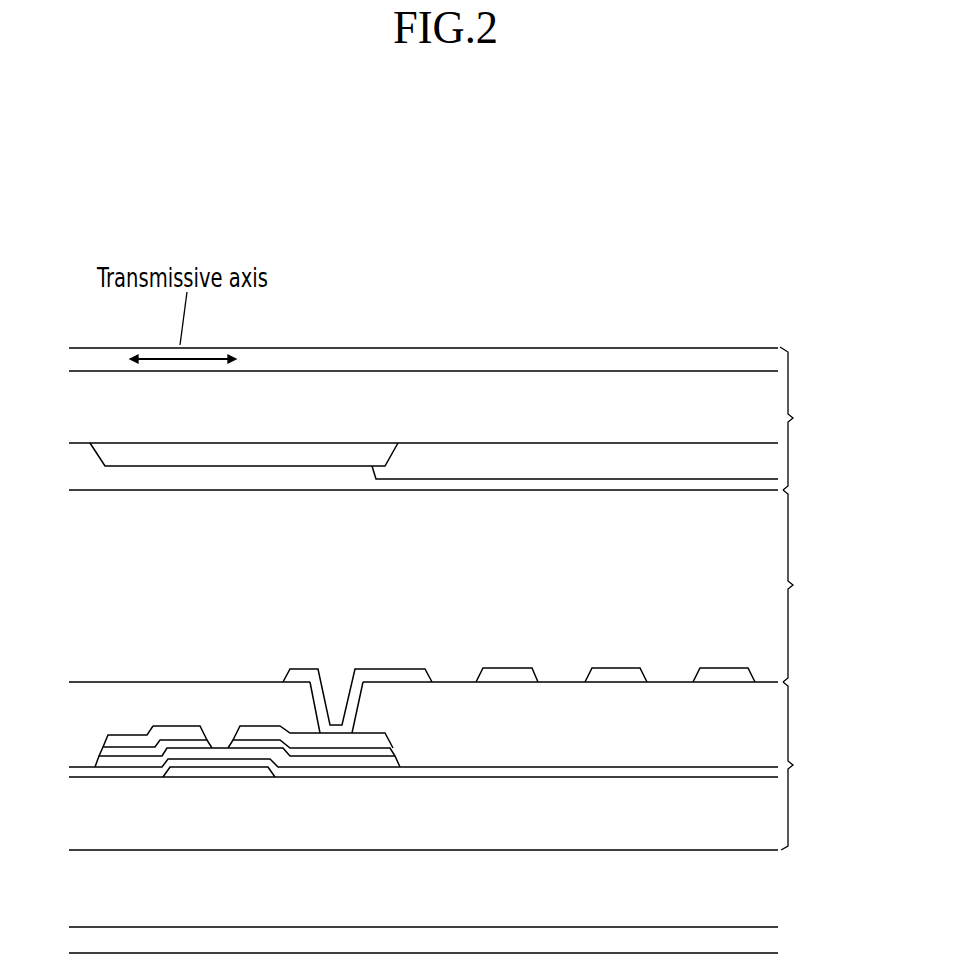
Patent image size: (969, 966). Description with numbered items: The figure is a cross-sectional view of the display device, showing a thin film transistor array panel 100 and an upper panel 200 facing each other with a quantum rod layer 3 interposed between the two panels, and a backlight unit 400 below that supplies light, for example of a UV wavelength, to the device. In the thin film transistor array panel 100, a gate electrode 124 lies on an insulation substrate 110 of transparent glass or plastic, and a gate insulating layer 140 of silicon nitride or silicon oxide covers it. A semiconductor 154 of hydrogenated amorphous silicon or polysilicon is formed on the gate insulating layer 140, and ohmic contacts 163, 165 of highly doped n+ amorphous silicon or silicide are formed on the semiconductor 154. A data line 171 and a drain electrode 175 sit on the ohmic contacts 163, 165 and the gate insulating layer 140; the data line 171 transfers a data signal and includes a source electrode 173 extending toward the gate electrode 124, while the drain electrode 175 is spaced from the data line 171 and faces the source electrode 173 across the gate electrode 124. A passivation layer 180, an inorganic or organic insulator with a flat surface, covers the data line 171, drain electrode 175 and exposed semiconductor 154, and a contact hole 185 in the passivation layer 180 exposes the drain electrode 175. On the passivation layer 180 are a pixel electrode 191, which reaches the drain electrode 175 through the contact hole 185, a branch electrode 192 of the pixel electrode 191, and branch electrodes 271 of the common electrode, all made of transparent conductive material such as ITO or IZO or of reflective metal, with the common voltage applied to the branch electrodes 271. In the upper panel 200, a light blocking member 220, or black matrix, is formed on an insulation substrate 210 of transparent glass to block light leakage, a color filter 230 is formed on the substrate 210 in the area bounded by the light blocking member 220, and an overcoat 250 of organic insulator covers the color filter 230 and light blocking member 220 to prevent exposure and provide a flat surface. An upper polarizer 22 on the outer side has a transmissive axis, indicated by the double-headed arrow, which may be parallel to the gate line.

The upper polarizer 22 is at (100, 358).
The insulation substrate 210 is at (607, 388).
The light blocking member 220 is at (268, 455).
The color filter 230 is at (485, 460).
The overcoat 250 is at (343, 478).
The upper panel 200 is at (807, 418).
The quantum rod layer 3 is at (797, 586).
The thin film transistor array panel 100 is at (807, 766).
The passivation layer 180 is at (608, 740).
The contact hole 185 is at (330, 688).
The pixel electrode 191 is at (400, 668).
The branch electrode of the common electrode 271 is at (507, 678).
The branch electrode of the pixel electrode 192 is at (610, 678).
The data line 171 is at (112, 734).
The source electrode 173 is at (184, 734).
The drain electrode 175 is at (250, 733).
The ohmic contact 163 is at (140, 750).
The ohmic contact 165 is at (337, 752).
The semiconductor 154 is at (246, 748).
The gate insulating layer 140 is at (433, 769).
The gate electrode 124 is at (208, 776).
The insulation substrate 110 is at (517, 830).
The backlight unit 400 is at (768, 941).